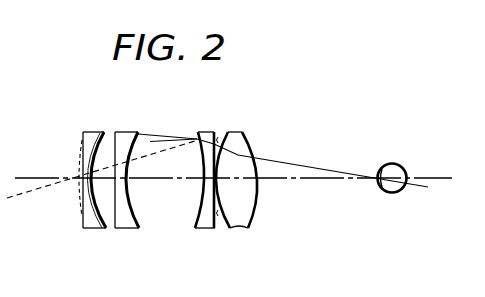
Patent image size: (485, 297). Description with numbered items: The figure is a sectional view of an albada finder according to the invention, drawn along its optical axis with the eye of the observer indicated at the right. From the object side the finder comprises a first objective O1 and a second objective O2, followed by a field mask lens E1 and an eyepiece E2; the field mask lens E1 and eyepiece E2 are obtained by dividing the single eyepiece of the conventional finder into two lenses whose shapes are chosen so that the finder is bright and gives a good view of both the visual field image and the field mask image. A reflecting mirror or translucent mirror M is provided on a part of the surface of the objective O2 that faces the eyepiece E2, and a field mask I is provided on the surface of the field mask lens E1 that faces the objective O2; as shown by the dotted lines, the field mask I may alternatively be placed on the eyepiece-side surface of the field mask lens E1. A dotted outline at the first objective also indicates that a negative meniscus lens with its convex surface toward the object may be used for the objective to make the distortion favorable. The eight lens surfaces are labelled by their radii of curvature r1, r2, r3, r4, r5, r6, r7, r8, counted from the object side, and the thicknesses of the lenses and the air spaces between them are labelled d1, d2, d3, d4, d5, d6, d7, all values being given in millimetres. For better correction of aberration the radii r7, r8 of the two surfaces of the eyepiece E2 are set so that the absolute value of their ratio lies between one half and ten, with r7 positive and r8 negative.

The objective O1 is at (72, 199).
The objective O2 is at (141, 199).
The field mask I is at (195, 137).
The field mask lens E1 is at (206, 199).
The eyepiece E2 is at (255, 199).
The reflecting mirror or translucent mirror M is at (137, 222).
The thickness d1 is at (80, 194).
The air space d2 is at (110, 218).
The thickness d3 is at (124, 182).
The air space d4 is at (178, 179).
The thickness d5 is at (206, 167).
The air space d6 is at (240, 198).
The thickness d7 is at (240, 181).
The radius of curvature r1 is at (83, 231).
The radius of curvature r2 is at (94, 226).
The radius of curvature r3 is at (119, 231).
The radius of curvature r4 is at (131, 232).
The radius of curvature r5 is at (200, 231).
The radius of curvature r6 is at (215, 232).
The radius of curvature r7 is at (238, 229).
The radius of curvature r8 is at (255, 222).